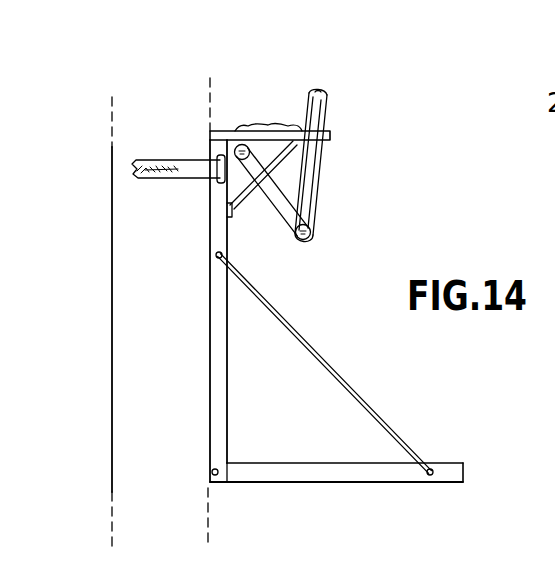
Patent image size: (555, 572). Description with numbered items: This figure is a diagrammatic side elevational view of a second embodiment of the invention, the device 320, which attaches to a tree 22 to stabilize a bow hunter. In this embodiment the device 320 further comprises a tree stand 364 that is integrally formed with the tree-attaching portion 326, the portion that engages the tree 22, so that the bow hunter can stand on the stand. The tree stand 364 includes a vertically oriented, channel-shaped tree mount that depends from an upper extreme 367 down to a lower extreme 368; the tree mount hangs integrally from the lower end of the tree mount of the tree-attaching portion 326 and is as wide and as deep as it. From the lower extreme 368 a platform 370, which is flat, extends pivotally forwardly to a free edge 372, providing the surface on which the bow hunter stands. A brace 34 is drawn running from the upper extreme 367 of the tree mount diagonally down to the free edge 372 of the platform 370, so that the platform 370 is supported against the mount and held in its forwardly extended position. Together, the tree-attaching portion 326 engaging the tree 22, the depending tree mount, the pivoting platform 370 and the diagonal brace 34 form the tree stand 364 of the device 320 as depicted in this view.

The tree 22 is at (153, 228).
The brace 34 is at (315, 349).
The device 320 is at (338, 181).
The tree-attaching portion 326 is at (209, 148).
The tree stand 364 is at (329, 341).
The upper extreme of the tree mount 367 is at (214, 258).
The lower extreme of the tree mount 368 is at (207, 478).
The platform 370 is at (336, 465).
The free edge 372 is at (440, 478).